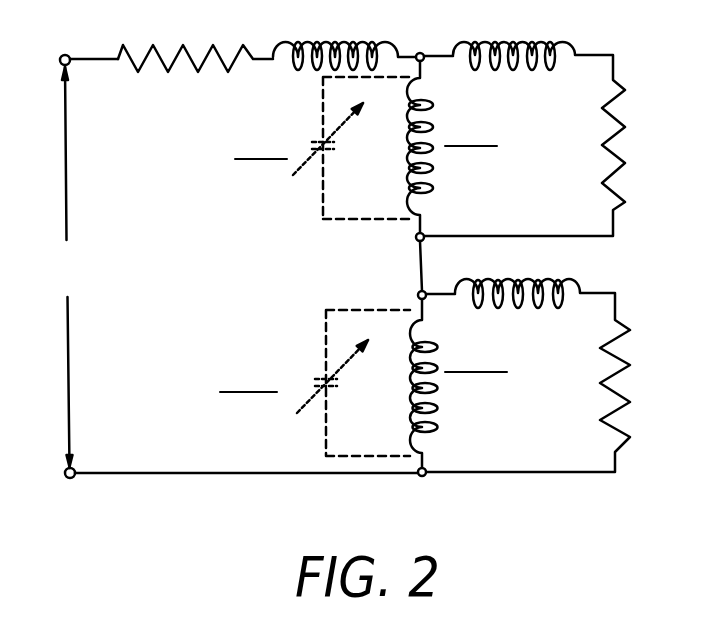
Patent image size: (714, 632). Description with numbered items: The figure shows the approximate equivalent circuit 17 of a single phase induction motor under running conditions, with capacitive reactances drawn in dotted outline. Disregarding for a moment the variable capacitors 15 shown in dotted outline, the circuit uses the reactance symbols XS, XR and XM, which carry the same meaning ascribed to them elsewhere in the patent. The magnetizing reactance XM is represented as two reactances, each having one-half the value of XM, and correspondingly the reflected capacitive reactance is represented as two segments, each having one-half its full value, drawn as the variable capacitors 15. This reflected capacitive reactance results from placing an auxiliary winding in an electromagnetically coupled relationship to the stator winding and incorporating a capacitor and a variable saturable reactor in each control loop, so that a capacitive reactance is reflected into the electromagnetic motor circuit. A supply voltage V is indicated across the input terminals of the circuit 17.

The variable capacitors 15 is at (287, 327).
The approximate equivalent circuit 17 is at (239, 287).
The stator reactance symbol XS is at (344, 35).
The rotor reactance symbol XR is at (527, 236).
The magnetizing reactance XM is at (457, 264).
The supply voltage V is at (76, 267).